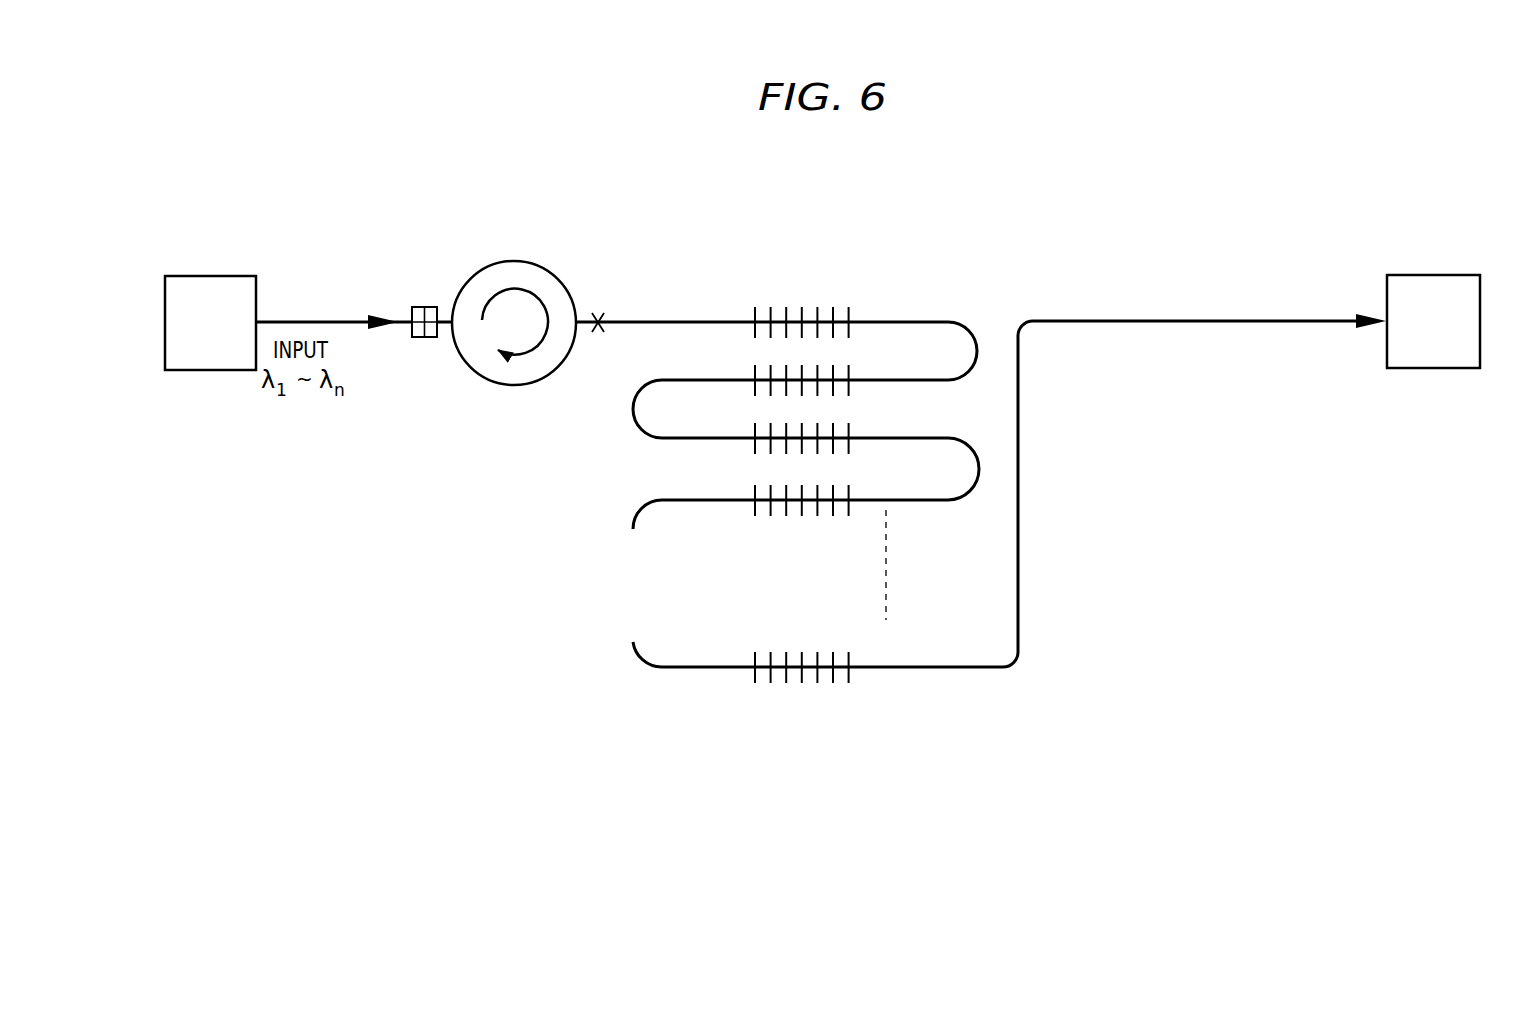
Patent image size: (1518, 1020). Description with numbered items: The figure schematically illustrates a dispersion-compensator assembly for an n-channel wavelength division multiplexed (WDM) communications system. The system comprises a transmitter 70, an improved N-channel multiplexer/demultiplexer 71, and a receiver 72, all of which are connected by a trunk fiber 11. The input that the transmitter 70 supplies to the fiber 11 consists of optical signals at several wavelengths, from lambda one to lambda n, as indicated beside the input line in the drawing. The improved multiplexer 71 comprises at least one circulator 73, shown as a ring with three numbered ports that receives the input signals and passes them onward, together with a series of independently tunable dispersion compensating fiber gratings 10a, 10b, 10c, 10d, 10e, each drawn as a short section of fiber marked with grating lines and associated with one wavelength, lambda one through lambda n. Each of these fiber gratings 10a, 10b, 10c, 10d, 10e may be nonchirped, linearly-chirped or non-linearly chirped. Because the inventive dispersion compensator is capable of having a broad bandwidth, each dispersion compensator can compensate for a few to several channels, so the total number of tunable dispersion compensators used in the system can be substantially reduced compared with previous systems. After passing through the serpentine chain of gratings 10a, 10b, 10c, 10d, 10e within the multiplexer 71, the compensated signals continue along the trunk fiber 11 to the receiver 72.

The transmitter 70 is at (210, 276).
The circulator 73 is at (512, 268).
The N-channel multiplexer/demultiplexer 71 is at (914, 183).
The dispersion compensating fiber grating 10a is at (745, 305).
The dispersion compensating fiber grating 10b is at (744, 373).
The dispersion compensating fiber grating 10c is at (747, 432).
The dispersion compensating fiber grating 10d is at (747, 492).
The dispersion compensating fiber grating 10e is at (750, 642).
The trunk fiber 11 is at (1100, 318).
The receiver 72 is at (1428, 275).